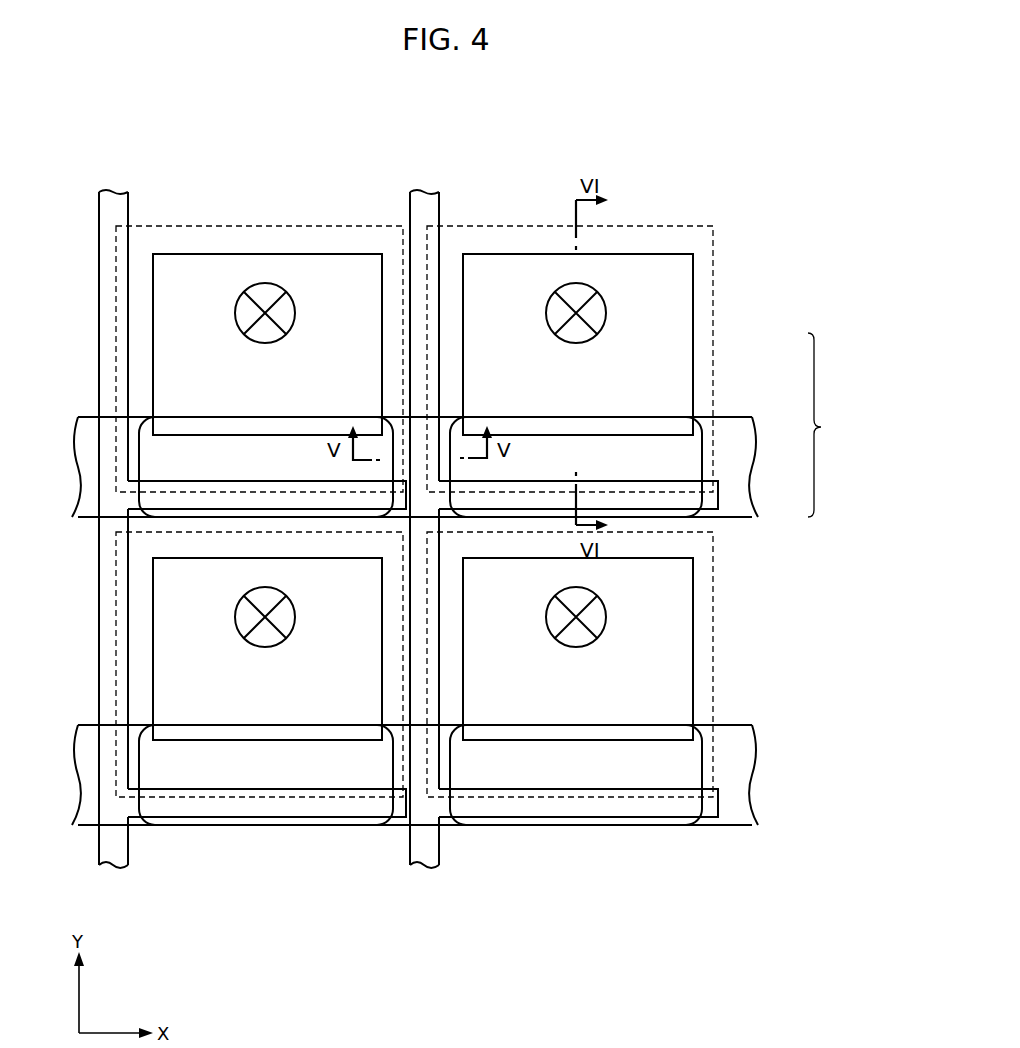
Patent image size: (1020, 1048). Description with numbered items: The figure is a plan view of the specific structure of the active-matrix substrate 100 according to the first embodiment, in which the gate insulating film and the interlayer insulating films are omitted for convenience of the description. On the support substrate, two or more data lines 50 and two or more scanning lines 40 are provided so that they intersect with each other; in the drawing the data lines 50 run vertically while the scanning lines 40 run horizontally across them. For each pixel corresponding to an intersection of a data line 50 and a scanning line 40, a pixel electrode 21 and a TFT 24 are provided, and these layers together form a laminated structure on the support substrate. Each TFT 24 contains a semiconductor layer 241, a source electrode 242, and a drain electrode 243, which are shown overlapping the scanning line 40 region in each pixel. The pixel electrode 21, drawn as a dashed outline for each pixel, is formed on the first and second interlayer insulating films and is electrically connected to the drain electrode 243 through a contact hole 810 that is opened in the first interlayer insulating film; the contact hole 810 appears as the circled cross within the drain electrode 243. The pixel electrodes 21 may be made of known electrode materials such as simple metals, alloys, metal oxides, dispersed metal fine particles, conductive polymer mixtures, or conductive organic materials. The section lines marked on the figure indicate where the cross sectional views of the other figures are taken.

The active-matrix substrate 100 is at (244, 119).
The data line 50 is at (112, 202).
The pixel electrode 21 is at (257, 226).
The contact hole 810 is at (595, 310).
The TFT 24 is at (830, 425).
The drain electrode 243 is at (675, 348).
The semiconductor layer 241 is at (687, 465).
The source electrode 242 is at (647, 503).
The scanning line 40 is at (723, 517).